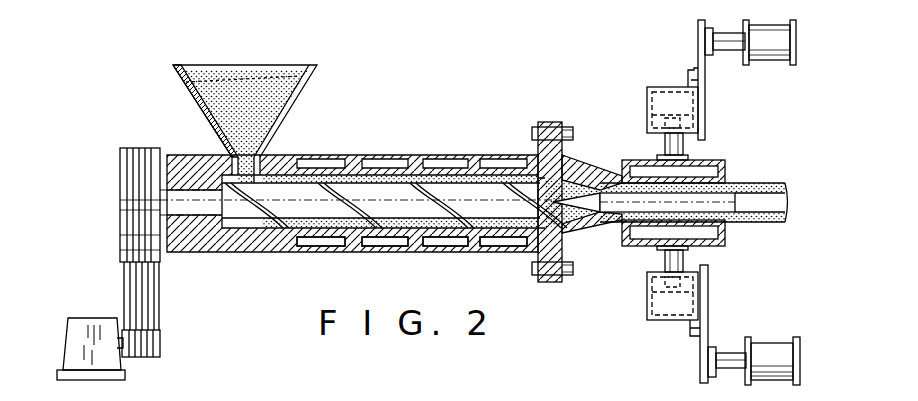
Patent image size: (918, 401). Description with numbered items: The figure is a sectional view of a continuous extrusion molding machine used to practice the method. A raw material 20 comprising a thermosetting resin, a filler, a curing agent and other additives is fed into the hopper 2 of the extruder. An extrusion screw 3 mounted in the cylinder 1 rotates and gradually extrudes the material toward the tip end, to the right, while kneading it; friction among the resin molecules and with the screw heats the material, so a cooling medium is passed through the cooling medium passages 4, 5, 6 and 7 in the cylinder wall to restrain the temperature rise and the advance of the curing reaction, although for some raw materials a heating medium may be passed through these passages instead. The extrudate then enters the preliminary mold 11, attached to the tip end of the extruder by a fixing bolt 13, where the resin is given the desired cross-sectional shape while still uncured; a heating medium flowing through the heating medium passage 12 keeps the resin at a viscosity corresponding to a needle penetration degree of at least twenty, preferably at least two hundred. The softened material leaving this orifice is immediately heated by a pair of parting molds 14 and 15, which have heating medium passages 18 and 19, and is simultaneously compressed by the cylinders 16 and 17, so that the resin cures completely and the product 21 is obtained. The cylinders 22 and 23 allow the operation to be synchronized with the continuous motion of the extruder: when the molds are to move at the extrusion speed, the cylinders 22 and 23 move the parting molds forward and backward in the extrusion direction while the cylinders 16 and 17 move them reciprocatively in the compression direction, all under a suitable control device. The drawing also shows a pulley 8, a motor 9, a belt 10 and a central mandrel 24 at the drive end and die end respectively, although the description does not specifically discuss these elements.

The cylinder 1 is at (370, 157).
The hopper 2 is at (205, 110).
The extrusion screw 3 is at (442, 177).
The cooling medium passage 4 is at (330, 246).
The cooling medium passage 5 is at (398, 246).
The cooling medium passage 6 is at (458, 246).
The cooling medium passage 7 is at (512, 246).
The drive pulley 8 is at (157, 264).
The motor 9 is at (90, 318).
The drive belt 10 is at (156, 312).
The preliminary mold 11 is at (590, 165).
The heating medium passage 12 is at (592, 235).
The fixing bolt 13 is at (557, 126).
The mold 14 is at (700, 156).
The mold 15 is at (696, 257).
The cylinder 16 is at (652, 88).
The cylinder 17 is at (654, 320).
The heating medium passage 18 is at (698, 168).
The heating medium passage 19 is at (722, 240).
The raw material 20 is at (280, 122).
The product 21 is at (752, 222).
The cylinder 22 is at (770, 62).
The cylinder 23 is at (776, 343).
The torpedo mandrel 24 is at (612, 225).